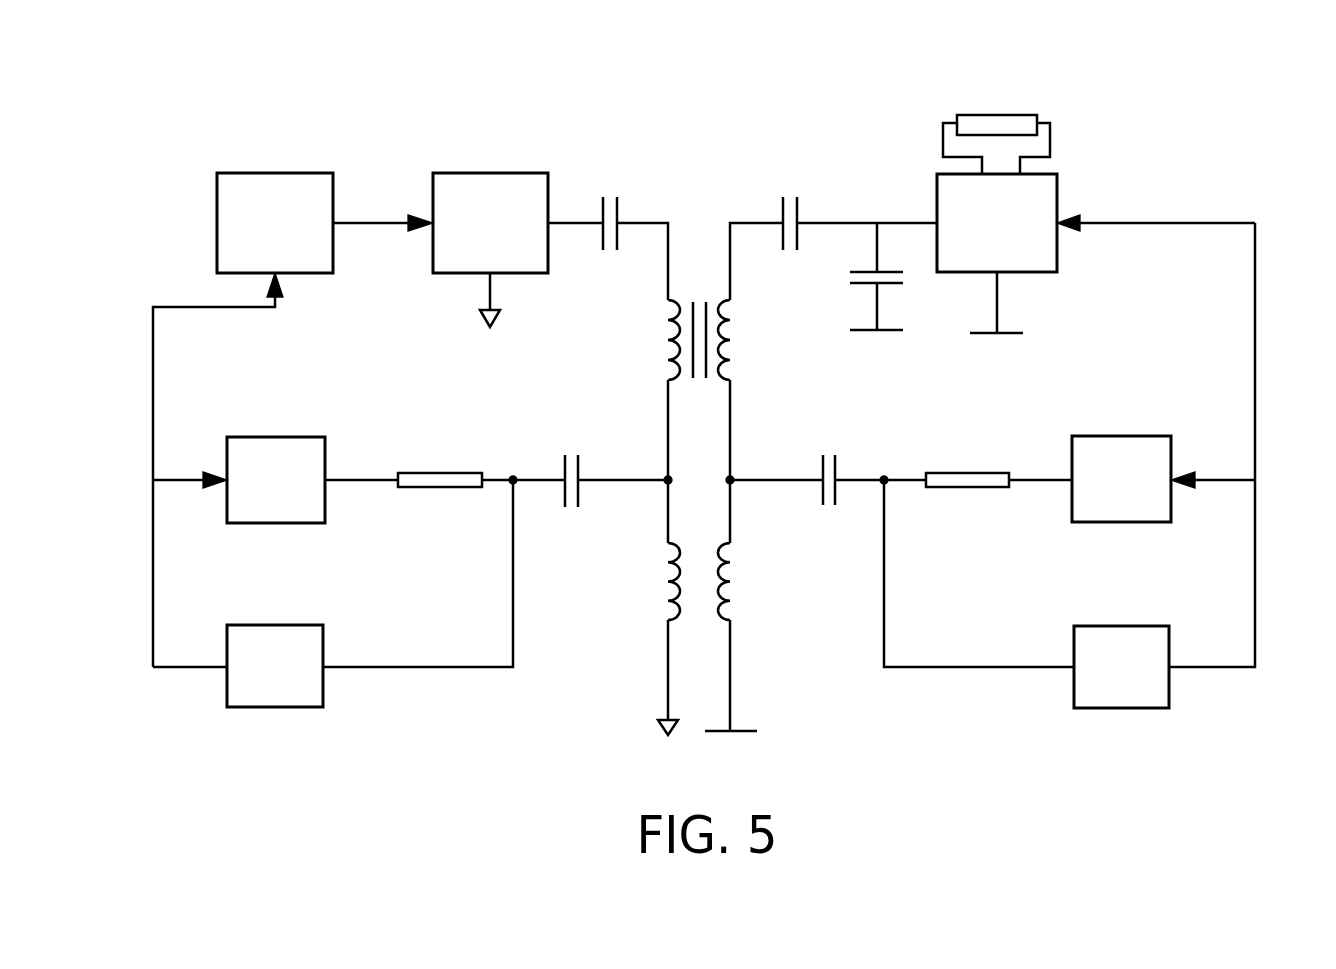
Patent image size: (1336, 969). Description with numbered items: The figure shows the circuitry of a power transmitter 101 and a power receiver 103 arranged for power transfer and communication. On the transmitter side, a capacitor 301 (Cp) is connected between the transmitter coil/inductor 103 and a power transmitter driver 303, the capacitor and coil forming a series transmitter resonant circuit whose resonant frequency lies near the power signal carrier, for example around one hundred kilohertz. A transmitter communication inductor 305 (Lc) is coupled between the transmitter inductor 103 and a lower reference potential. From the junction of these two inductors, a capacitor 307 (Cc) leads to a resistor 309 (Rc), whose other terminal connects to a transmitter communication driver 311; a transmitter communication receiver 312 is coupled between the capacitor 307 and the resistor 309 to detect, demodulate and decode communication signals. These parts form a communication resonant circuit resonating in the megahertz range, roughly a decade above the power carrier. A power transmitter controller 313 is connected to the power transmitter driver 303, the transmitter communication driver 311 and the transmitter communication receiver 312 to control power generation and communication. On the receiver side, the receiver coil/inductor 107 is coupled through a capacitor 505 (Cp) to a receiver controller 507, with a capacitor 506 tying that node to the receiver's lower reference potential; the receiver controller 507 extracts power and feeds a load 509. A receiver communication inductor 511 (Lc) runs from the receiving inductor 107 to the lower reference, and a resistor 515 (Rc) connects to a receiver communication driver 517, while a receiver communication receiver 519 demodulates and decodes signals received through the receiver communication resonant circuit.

The power transmitter 101 is at (180, 130).
The transmitter coil/inductor 103 is at (672, 376).
The receiver coil/inductor 107 is at (730, 375).
The capacitor 301 is at (612, 195).
The power transmitter driver 303 is at (493, 173).
The transmitter communication inductor 305 is at (672, 613).
The capacitor 307 is at (572, 505).
The resistor 309 is at (440, 473).
The transmitter communication driver 311 is at (283, 437).
The transmitter communication receiver 312 is at (280, 707).
The power transmitter controller 313 is at (285, 173).
The capacitor 505 is at (790, 197).
The capacitor 506 is at (860, 278).
The receiver controller 507 is at (952, 192).
The load 509 is at (1002, 115).
The receiver communication inductor 511 is at (735, 612).
The resistor 515 is at (962, 473).
The receiver communication driver 517 is at (1122, 436).
The receiver communication receiver 519 is at (1117, 708).